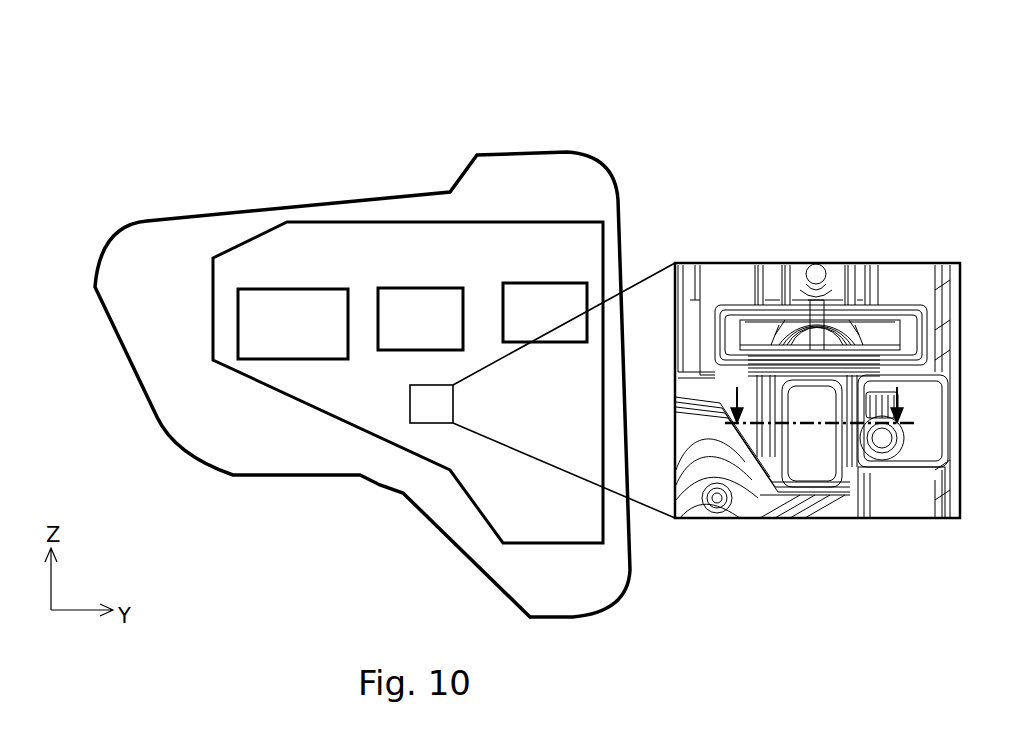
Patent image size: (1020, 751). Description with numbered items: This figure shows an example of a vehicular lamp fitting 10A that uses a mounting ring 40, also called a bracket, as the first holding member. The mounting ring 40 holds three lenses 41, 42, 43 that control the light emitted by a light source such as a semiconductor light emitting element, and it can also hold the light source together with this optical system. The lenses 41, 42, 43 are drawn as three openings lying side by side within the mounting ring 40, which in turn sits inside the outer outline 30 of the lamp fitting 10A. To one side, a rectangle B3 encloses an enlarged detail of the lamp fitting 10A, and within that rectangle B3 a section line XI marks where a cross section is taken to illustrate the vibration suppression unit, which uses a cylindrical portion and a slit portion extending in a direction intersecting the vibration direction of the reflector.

The vehicular lamp fitting 10A is at (417, 69).
The outer lens / housing outline 30 is at (223, 212).
The mounting ring 40 is at (592, 243).
The lens 41 is at (296, 315).
The lens 42 is at (420, 315).
The lens 43 is at (535, 313).
The rectangle B3 is at (845, 263).
The section line XI- XI is at (821, 391).